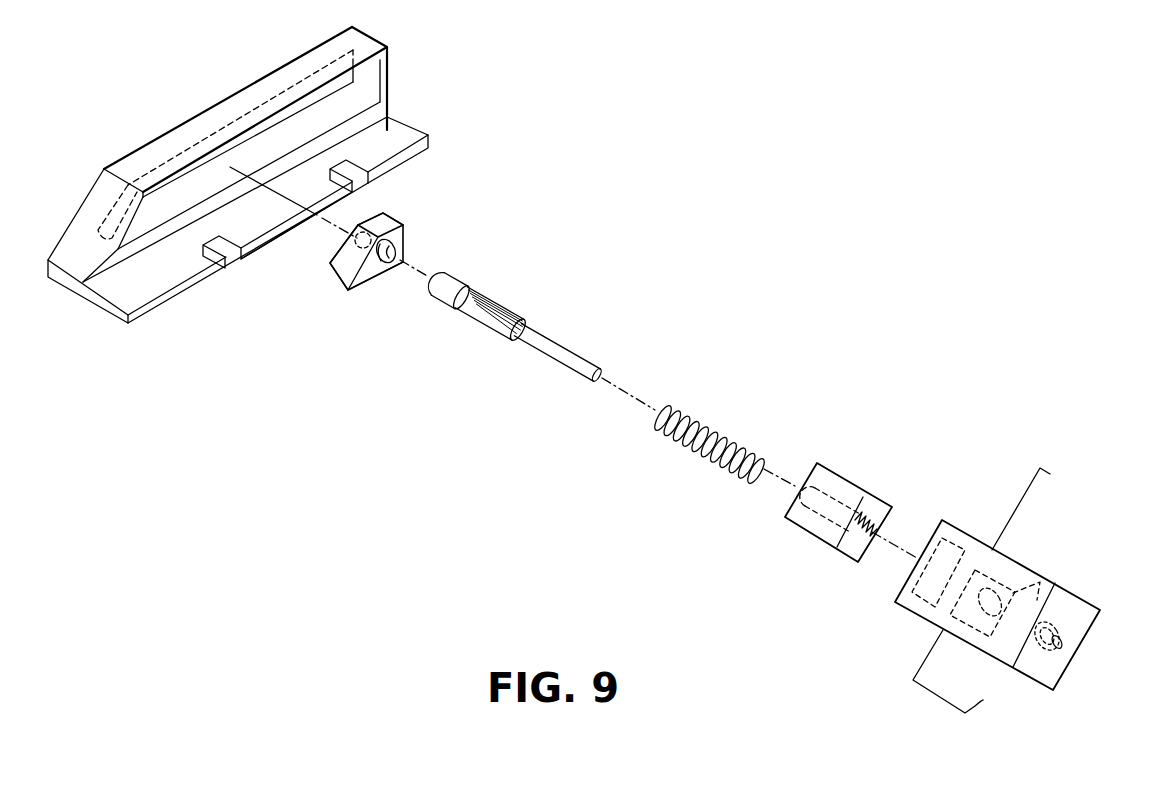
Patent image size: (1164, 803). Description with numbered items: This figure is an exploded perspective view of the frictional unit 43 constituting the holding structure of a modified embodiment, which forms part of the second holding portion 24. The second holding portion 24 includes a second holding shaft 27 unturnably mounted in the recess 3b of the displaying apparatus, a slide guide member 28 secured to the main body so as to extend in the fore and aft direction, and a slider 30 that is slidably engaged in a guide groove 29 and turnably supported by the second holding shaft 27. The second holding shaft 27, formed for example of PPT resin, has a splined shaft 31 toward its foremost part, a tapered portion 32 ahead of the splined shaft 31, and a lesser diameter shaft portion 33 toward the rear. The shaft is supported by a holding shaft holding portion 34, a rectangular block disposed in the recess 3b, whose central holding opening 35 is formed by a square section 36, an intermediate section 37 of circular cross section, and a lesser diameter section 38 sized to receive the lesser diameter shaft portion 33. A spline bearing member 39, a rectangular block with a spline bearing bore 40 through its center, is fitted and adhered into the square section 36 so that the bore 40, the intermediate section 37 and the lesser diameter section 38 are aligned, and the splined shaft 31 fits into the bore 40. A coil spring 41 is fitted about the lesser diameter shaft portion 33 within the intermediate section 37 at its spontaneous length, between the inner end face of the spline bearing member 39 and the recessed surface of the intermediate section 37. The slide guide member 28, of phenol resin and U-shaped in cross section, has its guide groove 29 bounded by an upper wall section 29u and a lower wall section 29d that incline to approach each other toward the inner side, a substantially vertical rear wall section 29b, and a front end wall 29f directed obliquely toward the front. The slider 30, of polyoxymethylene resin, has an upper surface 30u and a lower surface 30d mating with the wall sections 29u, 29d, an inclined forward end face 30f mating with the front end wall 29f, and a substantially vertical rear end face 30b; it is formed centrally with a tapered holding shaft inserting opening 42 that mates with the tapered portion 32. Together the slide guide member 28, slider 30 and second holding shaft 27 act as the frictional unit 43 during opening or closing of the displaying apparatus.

The second holding portion 24 is at (757, 312).
The second holding shaft 27 is at (458, 330).
The slide guide member 28 is at (206, 274).
The guide groove 29 is at (345, 104).
The rear wall section 29b is at (373, 86).
The upper wall section 29u is at (226, 118).
The front end wall 29f is at (135, 211).
The lower wall section 29d is at (228, 178).
The slider 30 is at (339, 275).
The upper surface of slider 30u is at (388, 220).
The rear end face 30b is at (395, 250).
The forward end face 30f is at (336, 255).
The lower surface 30d is at (350, 289).
The holding shaft inserting opening 42 is at (387, 253).
The splined shaft 31 is at (475, 313).
The tapered portion 32 is at (448, 294).
The lesser diameter shaft portion 33 is at (522, 334).
The frictional unit 43 is at (380, 393).
The coil spring 41 is at (703, 423).
The spline bearing member 39 is at (846, 478).
The spline bearing bore 40 is at (872, 517).
The holding shaft holding portion 34 is at (962, 537).
The central holding opening 35 is at (1153, 547).
The square section 36 is at (978, 564).
The intermediate section 37 is at (1022, 596).
The lesser diameter section 38 is at (1068, 640).
The recess 3b is at (1032, 493).